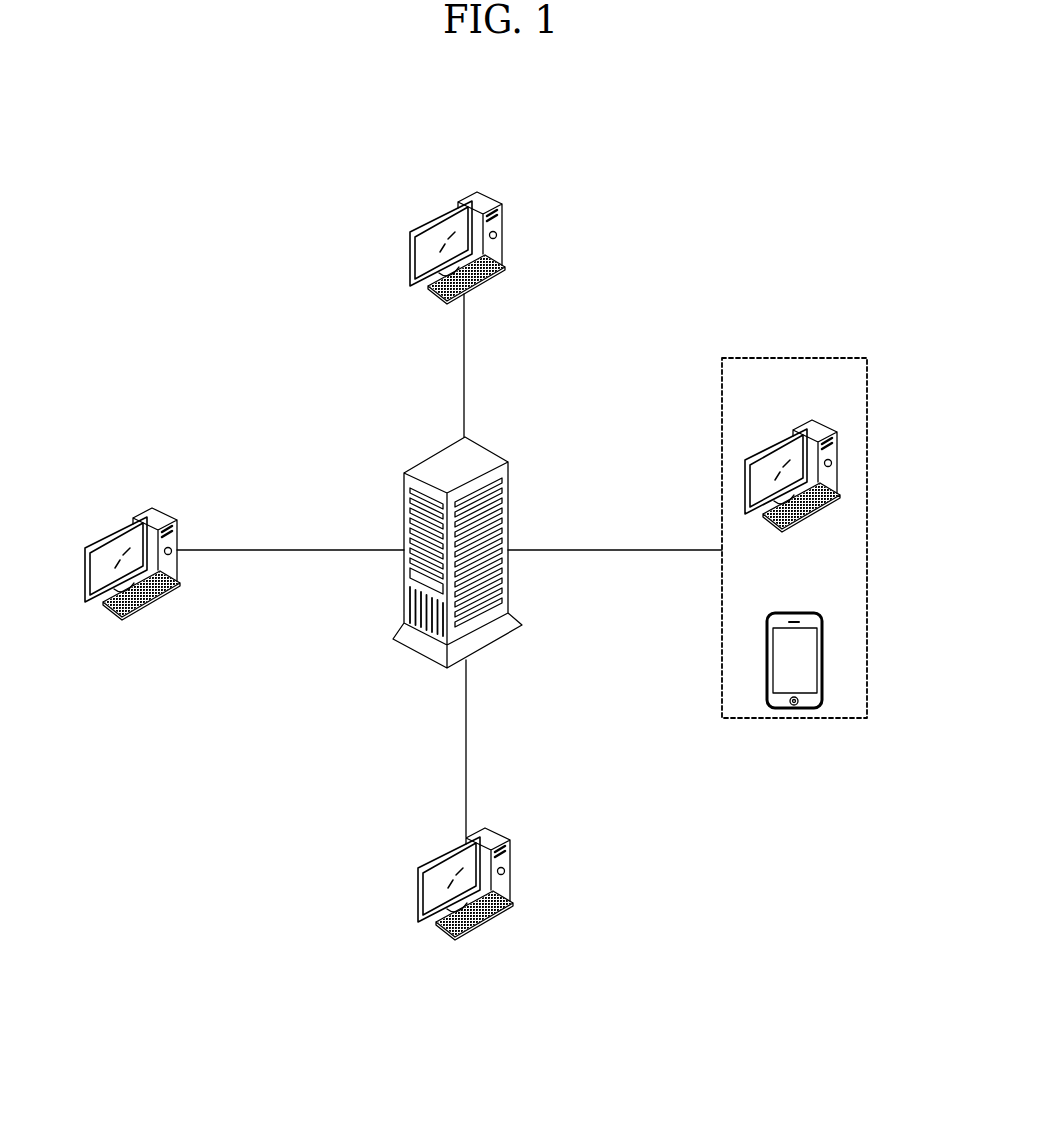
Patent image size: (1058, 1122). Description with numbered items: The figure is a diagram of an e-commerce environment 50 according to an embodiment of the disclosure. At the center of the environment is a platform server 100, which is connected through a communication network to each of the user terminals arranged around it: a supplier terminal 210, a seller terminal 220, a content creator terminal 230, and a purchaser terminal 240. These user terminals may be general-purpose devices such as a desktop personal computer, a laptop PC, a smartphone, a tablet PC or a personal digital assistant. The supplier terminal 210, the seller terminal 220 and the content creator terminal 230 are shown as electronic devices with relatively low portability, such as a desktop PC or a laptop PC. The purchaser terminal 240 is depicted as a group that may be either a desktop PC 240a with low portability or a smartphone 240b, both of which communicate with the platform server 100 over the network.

The e-commerce environment 50 is at (75, 124).
The platform server 100 is at (432, 458).
The supplier terminal 210 is at (117, 532).
The seller terminal 220 is at (500, 240).
The content creator terminal 230 is at (440, 858).
The purchaser terminal 240 is at (776, 394).
The desktop PC 240a is at (835, 460).
The smartphone 240b is at (822, 660).